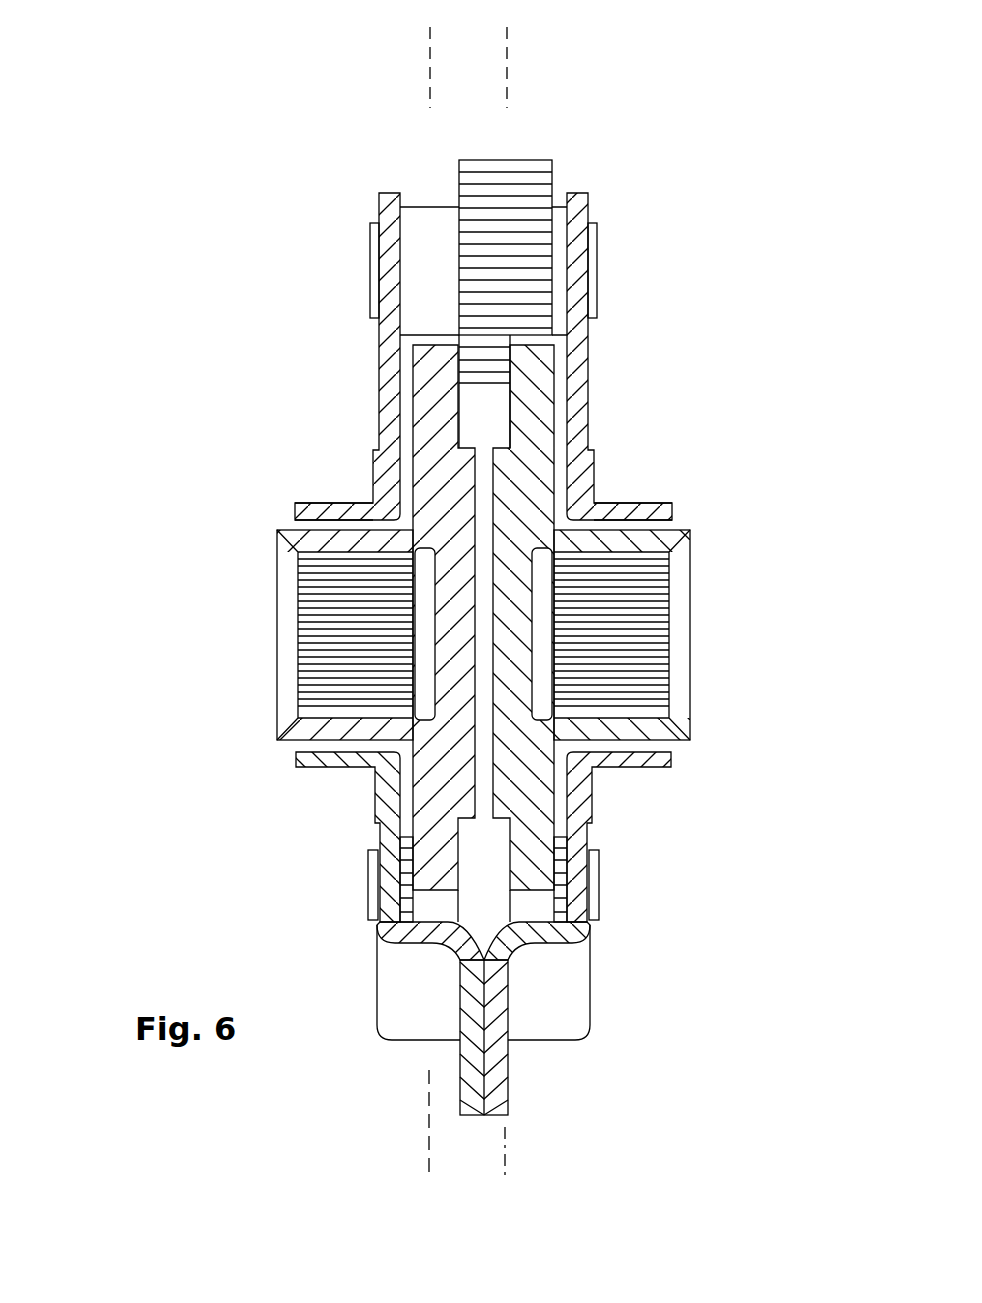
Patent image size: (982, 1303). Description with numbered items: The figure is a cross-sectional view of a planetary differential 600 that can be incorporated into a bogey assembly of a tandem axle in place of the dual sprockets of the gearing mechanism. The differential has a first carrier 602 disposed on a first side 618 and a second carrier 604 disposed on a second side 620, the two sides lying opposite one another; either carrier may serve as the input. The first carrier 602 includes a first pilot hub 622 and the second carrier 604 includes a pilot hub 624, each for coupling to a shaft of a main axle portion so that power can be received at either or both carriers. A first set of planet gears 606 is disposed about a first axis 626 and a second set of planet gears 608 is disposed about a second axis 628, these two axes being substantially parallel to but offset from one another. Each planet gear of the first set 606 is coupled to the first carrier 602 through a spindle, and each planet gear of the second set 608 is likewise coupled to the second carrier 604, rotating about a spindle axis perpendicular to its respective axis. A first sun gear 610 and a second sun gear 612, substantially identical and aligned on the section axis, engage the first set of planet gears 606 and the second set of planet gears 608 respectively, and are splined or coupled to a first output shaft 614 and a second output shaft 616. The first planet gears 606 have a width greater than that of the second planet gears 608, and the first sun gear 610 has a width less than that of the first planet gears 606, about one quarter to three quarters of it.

The planetary differential 600 is at (160, 156).
The first carrier 602 is at (584, 350).
The second carrier 604 is at (388, 350).
The first set of planet gears 606 is at (537, 226).
The second set of planet gears 608 is at (428, 223).
The first sun gear 610 is at (540, 463).
The second sun gear 612 is at (428, 464).
The first output shaft 614 is at (665, 600).
The second output shaft 616 is at (305, 592).
The first side 618 is at (705, 690).
The second side 620 is at (260, 690).
The first pilot hub 622 is at (637, 503).
The pilot hub 624 is at (333, 503).
The first axis 626 is at (512, 47).
The second axis 628 is at (426, 47).